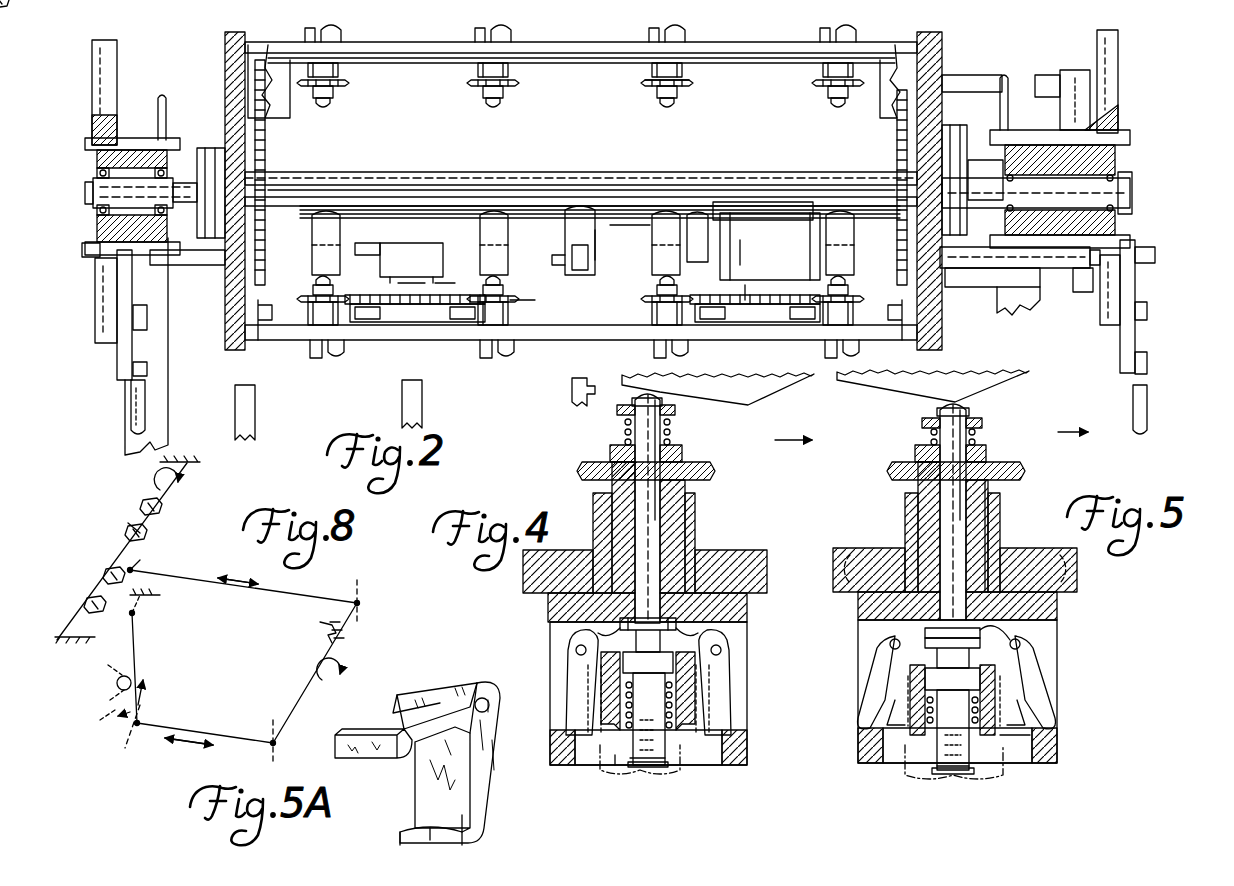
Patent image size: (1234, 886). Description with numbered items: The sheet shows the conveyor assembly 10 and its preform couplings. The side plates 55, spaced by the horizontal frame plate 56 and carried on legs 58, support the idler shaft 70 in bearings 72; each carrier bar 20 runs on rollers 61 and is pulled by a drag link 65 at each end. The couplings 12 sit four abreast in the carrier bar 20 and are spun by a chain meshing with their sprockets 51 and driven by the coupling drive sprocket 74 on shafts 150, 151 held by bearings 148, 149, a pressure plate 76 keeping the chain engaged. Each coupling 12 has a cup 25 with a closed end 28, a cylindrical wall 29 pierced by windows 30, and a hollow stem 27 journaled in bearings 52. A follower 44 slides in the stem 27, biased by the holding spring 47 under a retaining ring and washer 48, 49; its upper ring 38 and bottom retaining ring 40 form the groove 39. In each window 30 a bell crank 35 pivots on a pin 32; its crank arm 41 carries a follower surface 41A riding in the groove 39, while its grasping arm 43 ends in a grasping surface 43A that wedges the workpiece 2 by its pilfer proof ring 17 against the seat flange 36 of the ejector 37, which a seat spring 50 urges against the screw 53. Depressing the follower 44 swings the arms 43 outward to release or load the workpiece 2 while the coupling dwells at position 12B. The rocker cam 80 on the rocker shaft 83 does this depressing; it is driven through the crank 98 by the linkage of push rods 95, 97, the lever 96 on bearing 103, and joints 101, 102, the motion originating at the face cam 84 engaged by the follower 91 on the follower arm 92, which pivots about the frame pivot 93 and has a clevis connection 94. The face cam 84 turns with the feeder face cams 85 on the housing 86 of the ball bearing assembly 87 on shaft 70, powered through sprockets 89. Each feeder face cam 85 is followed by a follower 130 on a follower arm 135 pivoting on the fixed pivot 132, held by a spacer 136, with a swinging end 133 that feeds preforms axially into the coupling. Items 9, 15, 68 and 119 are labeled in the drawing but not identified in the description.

In FIG. 4, the workpiece 2 is at (700, 775).
In FIG. 5, the workpiece 2 is at (905, 780).
In FIG. 2, the bracket 9 is at (255, 430).
In FIG. 2, the conveyor assembly 10 is at (222, 322).
In FIG. 2, the coupling 12 is at (340, 72).
In FIG. 4, the coupling 12 is at (498, 628).
In FIG. 5, the coupling 12 is at (1112, 656).
In FIG. 2, the loading position 12B is at (340, 350).
In FIG. 4, the abrasive strip 15 is at (740, 404).
In FIG. 5, the abrasive strip 15 is at (953, 400).
In FIG. 5, the pilfer proof ring 17 is at (1017, 742).
In FIG. 2, the carrier bar 20 is at (582, 54).
In FIG. 4, the carrier bar 20 is at (767, 556).
In FIG. 5, the carrier bar 20 is at (1077, 560).
In FIG. 4, the cup-shaped member 25 is at (748, 755).
In FIG. 5, the cup-shaped member 25 is at (858, 756).
In FIG. 4, the hollow stem 27 is at (672, 522).
In FIG. 5, the hollow stem 27 is at (915, 495).
In FIG. 4, the closed end 28 is at (748, 606).
In FIG. 5, the closed end 28 is at (1057, 612).
In FIG. 4, the cylindrical wall 29 is at (740, 740).
In FIG. 5, the cylindrical wall 29 is at (858, 740).
In FIG. 5, the window 30 is at (878, 652).
In FIG. 5, the pin 32 is at (888, 648).
In FIG. 4, the bell crank 35 is at (730, 684).
In FIG. 5, the bell crank 35 is at (868, 700).
In FIG. 5A, the bell crank 35 is at (498, 742).
In FIG. 4, the seat flange 36 is at (598, 672).
In FIG. 5, the seat flange 36 is at (1000, 700).
In FIG. 4, the ejector 37 is at (618, 748).
In FIG. 5, the ejector 37 is at (990, 765).
In FIG. 5, the upper ring 38 is at (1040, 630).
In FIG. 4, the detent actuating groove 39 is at (648, 635).
In FIG. 5, the detent actuating groove 39 is at (952, 653).
In FIG. 4, the bottom retaining ring 40 is at (648, 663).
In FIG. 5, the bottom retaining ring 40 is at (952, 679).
In FIG. 4, the crank arm 41 is at (580, 630).
In FIG. 5, the crank arm 41 is at (905, 612).
In FIG. 5A, the crank arm 41 is at (400, 712).
In FIG. 5A, the follower surface 41A is at (410, 752).
In FIG. 4, the grasping arm 43 is at (578, 702).
In FIG. 5, the grasping arm 43 is at (1050, 728).
In FIG. 5A, the grasping arm 43 is at (482, 790).
In FIG. 5A, the grasping surface 43A is at (415, 835).
In FIG. 4, the follower 44 is at (647, 508).
In FIG. 5, the follower 44 is at (953, 512).
In FIG. 4, the holding spring 47 is at (625, 432).
In FIG. 5, the holding spring 47 is at (978, 436).
In FIG. 4, the retaining ring 48 is at (632, 400).
In FIG. 5, the retaining ring 48 is at (937, 412).
In FIG. 4, the washer 49 is at (675, 408).
In FIG. 5, the washer 49 is at (982, 422).
In FIG. 4, the seat spring 50 is at (628, 688).
In FIG. 5, the seat spring 50 is at (970, 725).
In FIG. 2, the coupling sprocket 51 is at (690, 82).
In FIG. 4, the coupling sprocket 51 is at (712, 472).
In FIG. 5, the coupling sprocket 51 is at (892, 468).
In FIG. 4, the journal bearings 52 is at (600, 548).
In FIG. 5, the journal bearings 52 is at (990, 555).
In FIG. 4, the screw 53 is at (650, 768).
In FIG. 5, the screw 53 is at (960, 775).
In FIG. 2, the conveyor side plate 55 is at (225, 50).
In FIG. 2, the horizontal frame plate 56 is at (548, 250).
In FIG. 8, the horizontal frame plate 56 is at (320, 630).
In FIG. 2, the legs 58 is at (125, 455).
In FIG. 5, the rollers 61 is at (866, 548).
In FIG. 2, the drag link 65 is at (265, 340).
In FIG. 2, the chain 68 is at (268, 145).
In FIG. 2, the idler shaft 70 is at (462, 172).
In FIG. 2, the bearings 72 is at (212, 148).
In FIG. 2, the coupling drive sprocket 74 is at (358, 296).
In FIG. 2, the pressure plate 76 is at (365, 318).
In FIG. 2, the rocker cam 80 is at (855, 200).
In FIG. 8, the rocker cam 80 is at (143, 507).
In FIG. 2, the rocker shaft 83 is at (535, 215).
In FIG. 8, the rocker shaft 83 is at (148, 526).
In FIG. 2, the face cam 84 is at (1078, 70).
In FIG. 8, the face cam 84 is at (125, 735).
In FIG. 2, the feeder face cam 85 is at (117, 52).
In FIG. 2, the housing 86 is at (135, 138).
In FIG. 2, the ball bearing assembly 87 is at (92, 168).
In FIG. 2, the sprocket 89 is at (165, 98).
In FIG. 8, the cam follower 91 is at (117, 684).
In FIG. 2, the follower arm 92 is at (1050, 75).
In FIG. 8, the follower arm 92 is at (134, 640).
In FIG. 2, the frame pivot 93 is at (975, 82).
In FIG. 8, the frame pivot 93 is at (138, 616).
In FIG. 8, the clevis connection 94 is at (148, 718).
In FIG. 8, the first push rod 95 is at (232, 735).
In FIG. 2, the horizontal lever 96 is at (614, 265).
In FIG. 8, the horizontal lever 96 is at (312, 680).
In FIG. 2, the second push rod 97 is at (578, 278).
In FIG. 8, the second push rod 97 is at (262, 592).
In FIG. 2, the crank 98 is at (636, 240).
In FIG. 8, the crank 98 is at (138, 565).
In FIG. 8, the clevis joint 101 is at (278, 742).
In FIG. 8, the clevis joint 102 is at (360, 602).
In FIG. 2, the bearing 103 is at (765, 262).
In FIG. 8, the bearing 103 is at (333, 660).
In FIG. 2, the rod end 119 is at (130, 412).
In FIG. 2, the follower 130 is at (102, 320).
In FIG. 2, the fixed pivot 132 is at (108, 257).
In FIG. 2, the swinging end 133 is at (133, 357).
In FIG. 2, the follower arm 135 is at (117, 370).
In FIG. 2, the spacer 136 is at (204, 268).
In FIG. 2, the bearing 148 is at (810, 212).
In FIG. 2, the bearing 149 is at (399, 263).
In FIG. 2, the shaft 150 is at (742, 300).
In FIG. 2, the shaft 151 is at (440, 287).